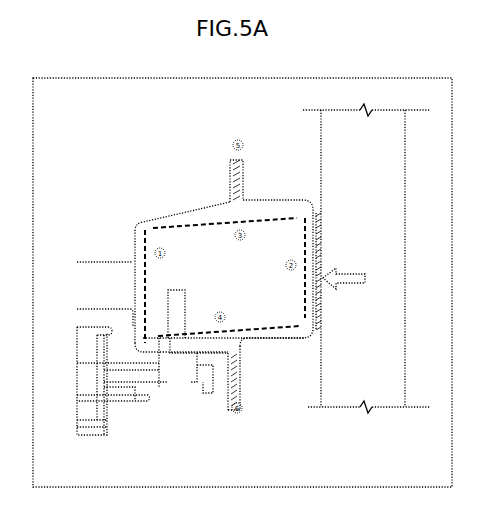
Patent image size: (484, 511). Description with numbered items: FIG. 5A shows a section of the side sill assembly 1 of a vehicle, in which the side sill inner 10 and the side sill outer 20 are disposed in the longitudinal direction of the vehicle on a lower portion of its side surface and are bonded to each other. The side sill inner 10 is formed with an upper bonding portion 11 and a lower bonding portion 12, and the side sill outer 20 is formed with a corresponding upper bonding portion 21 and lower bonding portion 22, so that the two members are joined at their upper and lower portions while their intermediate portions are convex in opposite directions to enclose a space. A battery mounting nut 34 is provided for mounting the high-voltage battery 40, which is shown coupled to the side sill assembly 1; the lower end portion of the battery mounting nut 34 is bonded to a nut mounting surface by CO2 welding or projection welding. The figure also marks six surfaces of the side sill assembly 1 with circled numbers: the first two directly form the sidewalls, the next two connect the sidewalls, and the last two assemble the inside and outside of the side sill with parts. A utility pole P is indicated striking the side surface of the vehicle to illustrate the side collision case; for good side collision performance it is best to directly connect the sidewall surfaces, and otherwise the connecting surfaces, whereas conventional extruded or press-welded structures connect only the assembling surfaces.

The side sill assembly 1 is at (287, 115).
The side sill inner 10 is at (132, 283).
The upper bonding portion 11 is at (230, 177).
The lower bonding portion 12 is at (207, 397).
The side sill outer 20 is at (322, 244).
The upper bonding portion 21 is at (243, 173).
The lower bonding portion 22 is at (243, 370).
The battery mounting nut 34 is at (172, 300).
The high-voltage battery 40 is at (135, 403).
The utility pole P is at (350, 410).